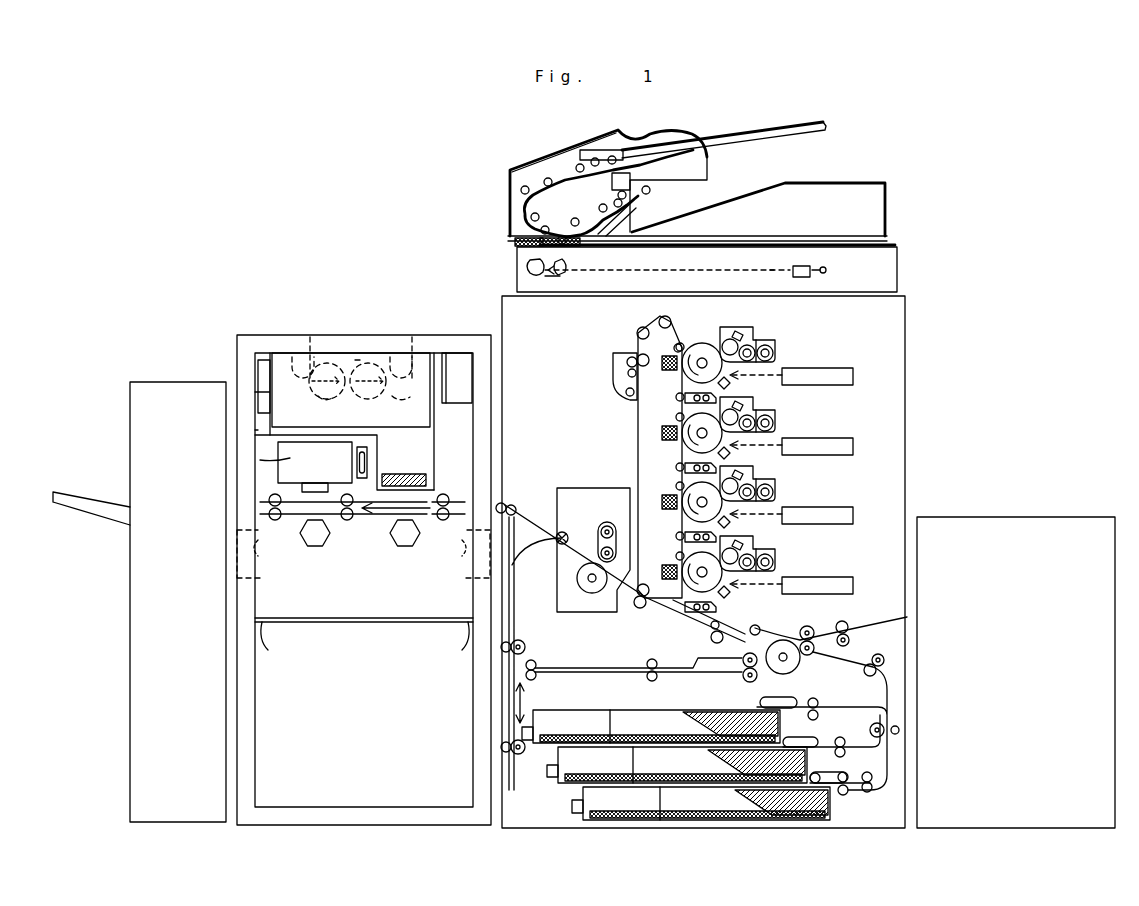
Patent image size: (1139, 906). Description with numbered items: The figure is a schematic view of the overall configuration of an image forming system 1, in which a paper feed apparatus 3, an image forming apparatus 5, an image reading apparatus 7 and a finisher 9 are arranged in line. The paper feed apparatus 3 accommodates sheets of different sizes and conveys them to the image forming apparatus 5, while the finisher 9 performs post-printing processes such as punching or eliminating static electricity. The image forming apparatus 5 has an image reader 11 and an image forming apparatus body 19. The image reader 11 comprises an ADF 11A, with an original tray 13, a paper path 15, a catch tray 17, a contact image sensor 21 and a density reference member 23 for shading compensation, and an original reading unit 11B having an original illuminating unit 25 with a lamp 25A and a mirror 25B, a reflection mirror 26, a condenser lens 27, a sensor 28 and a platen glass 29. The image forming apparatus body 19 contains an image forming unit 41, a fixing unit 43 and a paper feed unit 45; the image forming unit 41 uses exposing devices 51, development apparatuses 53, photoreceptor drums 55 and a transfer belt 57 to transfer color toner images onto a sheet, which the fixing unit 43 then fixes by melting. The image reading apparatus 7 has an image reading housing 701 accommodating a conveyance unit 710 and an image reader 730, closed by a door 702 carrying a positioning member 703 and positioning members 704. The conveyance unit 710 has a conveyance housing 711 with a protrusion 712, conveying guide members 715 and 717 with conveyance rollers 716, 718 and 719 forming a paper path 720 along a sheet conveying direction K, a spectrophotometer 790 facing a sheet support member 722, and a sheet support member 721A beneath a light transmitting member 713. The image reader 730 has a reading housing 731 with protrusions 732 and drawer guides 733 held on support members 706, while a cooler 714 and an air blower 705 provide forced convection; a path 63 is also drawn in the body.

The image forming system 1 is at (1031, 116).
The paper feed apparatus 3 is at (1005, 505).
The image forming apparatus 5 is at (851, 148).
The image reading apparatus 7 is at (364, 219).
The finisher 9 is at (169, 365).
The image reader 11 is at (440, 270).
The ADF 11A is at (497, 188).
The original reading unit 11B is at (502, 249).
The original tray 13 is at (733, 134).
The paper path 15 is at (533, 168).
The catch tray 17 is at (750, 192).
The image forming apparatus body 19 is at (905, 323).
The contact image sensor 21 is at (590, 203).
The density reference member 23 is at (630, 212).
The original illuminating unit 25 is at (665, 269).
The lamp 25A is at (636, 283).
The mirror 25B is at (587, 279).
The reflection mirror 26 is at (527, 266).
The condenser lens 27 is at (782, 268).
The sensor 28 is at (822, 273).
The platen glass 29 is at (812, 250).
The image forming unit 41 is at (582, 361).
The fixing unit 43 is at (600, 488).
The paper feed unit 45 is at (528, 818).
The exposing devices 51 is at (826, 368).
The development apparatuses 53 is at (775, 335).
The photoreceptor drums 55 is at (708, 345).
The transfer belt 57 is at (620, 402).
The sheet conveying path 63 is at (868, 698).
The image reading housing 701 is at (420, 350).
The door 702 is at (371, 750).
The positioning member 703 is at (268, 650).
The positioning members 704 is at (300, 352).
The air blower 705 is at (346, 381).
The support members 706 is at (262, 358).
The conveyance unit 710 is at (410, 632).
The conveyance housing 711 is at (350, 622).
The protrusion 712 is at (363, 570).
The light transmitting member 713 is at (430, 462).
The cooler 714 is at (370, 438).
The conveying guide member 715 is at (448, 496).
The conveyance roller 716 is at (450, 525).
The conveying guide member 717 is at (350, 520).
The conveyance rollers 718 is at (270, 498).
The conveyance rollers 719 is at (280, 518).
The paper path 720 is at (335, 482).
The sheet support member 721A is at (375, 530).
The sheet support member 722 is at (310, 548).
The image reader 730 is at (336, 272).
The reading housing 731 is at (372, 352).
The protrusions 732 is at (375, 352).
The drawer guide 733 is at (286, 360).
The spectrophotometer 790 is at (260, 460).
The sheet conveying direction K is at (378, 532).